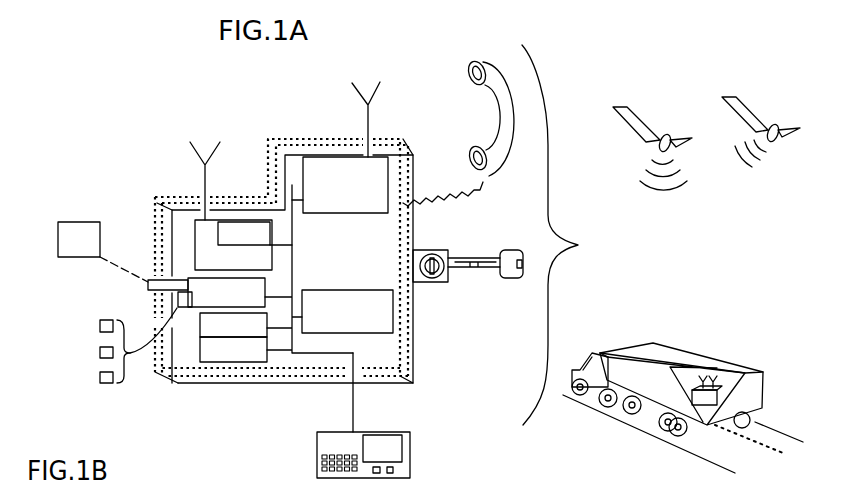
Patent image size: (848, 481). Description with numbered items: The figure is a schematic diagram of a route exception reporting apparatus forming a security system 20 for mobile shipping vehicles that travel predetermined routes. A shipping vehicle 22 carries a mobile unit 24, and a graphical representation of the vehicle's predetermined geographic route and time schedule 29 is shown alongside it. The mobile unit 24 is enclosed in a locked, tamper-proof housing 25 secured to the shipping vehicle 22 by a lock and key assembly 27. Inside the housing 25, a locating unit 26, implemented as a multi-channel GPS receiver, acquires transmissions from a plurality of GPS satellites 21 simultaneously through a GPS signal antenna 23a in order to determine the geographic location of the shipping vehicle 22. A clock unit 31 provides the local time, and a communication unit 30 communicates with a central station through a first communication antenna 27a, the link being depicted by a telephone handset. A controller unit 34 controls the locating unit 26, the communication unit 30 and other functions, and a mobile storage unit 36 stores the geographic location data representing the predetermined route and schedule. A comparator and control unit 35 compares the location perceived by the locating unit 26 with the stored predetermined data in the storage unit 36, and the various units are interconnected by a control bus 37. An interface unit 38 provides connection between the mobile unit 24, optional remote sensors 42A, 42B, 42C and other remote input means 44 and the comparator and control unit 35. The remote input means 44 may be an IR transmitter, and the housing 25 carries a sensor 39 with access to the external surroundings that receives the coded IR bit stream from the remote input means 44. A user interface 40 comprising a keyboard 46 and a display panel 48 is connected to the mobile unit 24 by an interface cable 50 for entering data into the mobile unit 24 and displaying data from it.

The security system 20 is at (680, 53).
The GPS satellite 21 is at (652, 127).
The shipping vehicle 22 is at (670, 392).
The GPS signal antenna 23a is at (200, 173).
The mobile unit 24 is at (720, 393).
The housing 25 is at (257, 195).
The locating unit 26 is at (233, 246).
The lock and key assembly 27 is at (448, 255).
The first communication antenna 27a is at (360, 123).
The predetermined route and time schedule 29 is at (490, 56).
The communication unit 30 is at (340, 185).
The clock unit 31 is at (255, 233).
The controller unit 34 is at (347, 311).
The comparator and control unit 35 is at (233, 325).
The mobile storage unit 36 is at (233, 351).
The control bus 37 is at (293, 268).
The interface unit 38 is at (226, 293).
The sensor 39 is at (150, 292).
The user interface 40 is at (377, 451).
The remote sensor 42A is at (100, 325).
The remote sensor 42B is at (100, 353).
The remote sensor 42C is at (100, 378).
The remote input means 44 is at (103, 252).
The keyboard 46 is at (318, 462).
The display panel 48 is at (390, 452).
The interface cable 50 is at (353, 422).